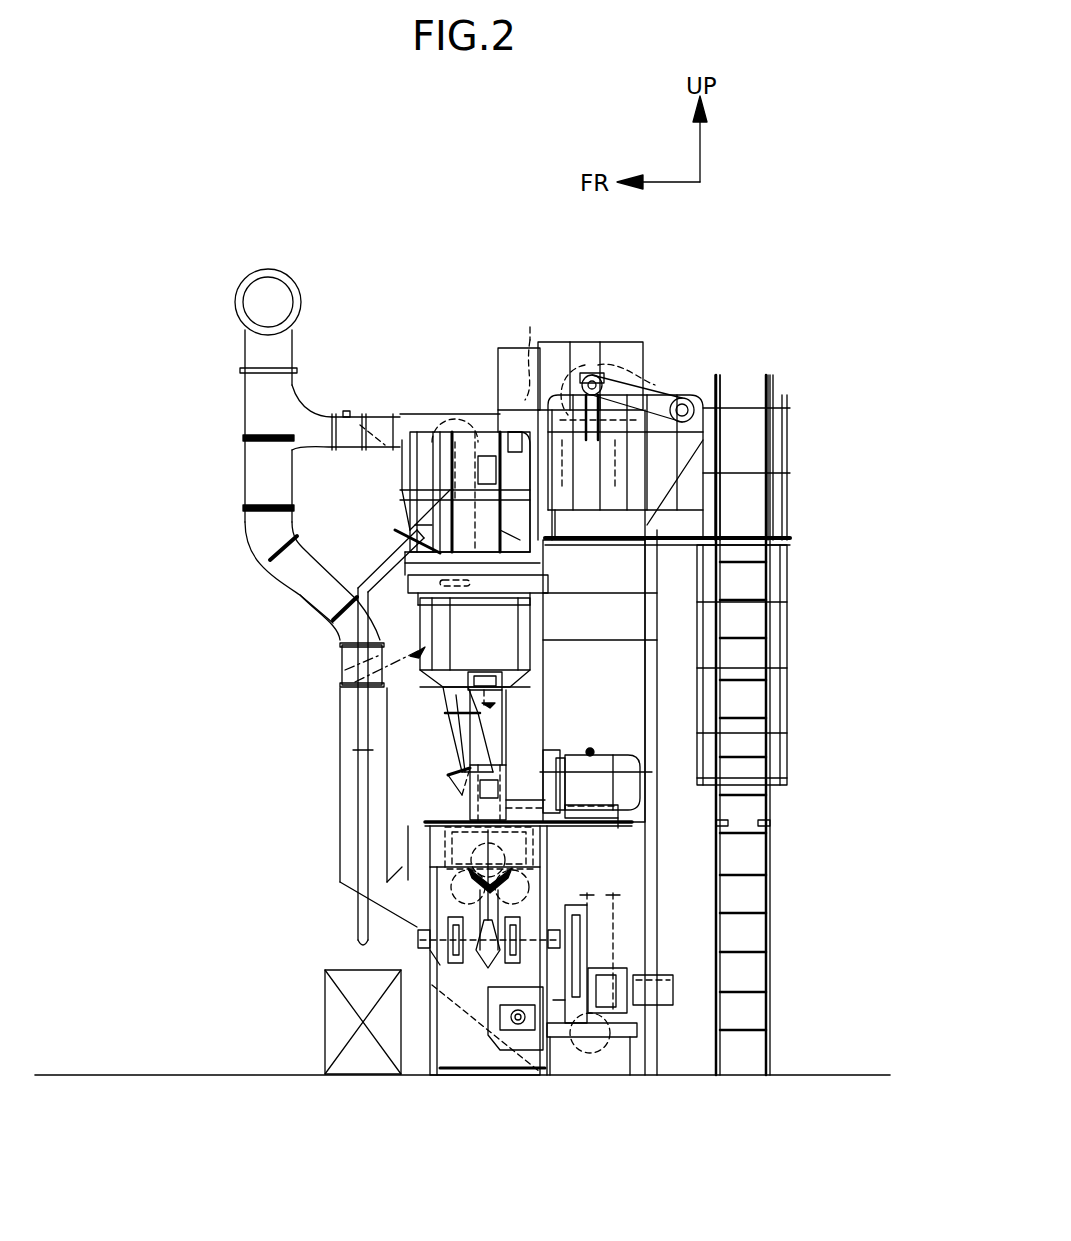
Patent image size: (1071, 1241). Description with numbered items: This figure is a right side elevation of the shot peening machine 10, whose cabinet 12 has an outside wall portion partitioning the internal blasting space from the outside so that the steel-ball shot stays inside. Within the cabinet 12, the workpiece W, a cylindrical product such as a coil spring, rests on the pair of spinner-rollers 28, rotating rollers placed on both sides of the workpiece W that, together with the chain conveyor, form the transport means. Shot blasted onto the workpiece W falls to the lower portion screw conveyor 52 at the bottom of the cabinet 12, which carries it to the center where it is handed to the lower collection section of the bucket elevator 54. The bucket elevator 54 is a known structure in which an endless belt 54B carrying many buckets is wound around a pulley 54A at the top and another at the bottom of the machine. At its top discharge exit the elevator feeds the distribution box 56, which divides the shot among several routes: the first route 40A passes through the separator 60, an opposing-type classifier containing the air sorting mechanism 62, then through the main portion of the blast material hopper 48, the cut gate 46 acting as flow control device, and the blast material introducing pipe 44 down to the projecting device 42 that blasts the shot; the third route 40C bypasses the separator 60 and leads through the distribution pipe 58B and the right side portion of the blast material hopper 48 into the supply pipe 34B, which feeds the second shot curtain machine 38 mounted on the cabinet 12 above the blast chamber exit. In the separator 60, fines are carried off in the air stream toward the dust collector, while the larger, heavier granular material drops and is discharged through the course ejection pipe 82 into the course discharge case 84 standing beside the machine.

The shot peening machine 10 is at (722, 258).
The cabinet 12 is at (440, 822).
The spinner-rollers 28 is at (450, 878).
The supply pipe 34B is at (495, 705).
The second shot curtain machine 38 is at (490, 770).
The first route 40A is at (450, 726).
The third route 40C is at (505, 723).
The projecting device 42 is at (464, 796).
The blast material introducing pipe 44 is at (456, 740).
The cut gate 46 is at (455, 693).
The blast material hopper 48 is at (358, 690).
The lower portion screw conveyor 52 is at (518, 1032).
The bucket elevator 54 is at (620, 342).
The pulley 54A is at (597, 1093).
The endless belt 54B is at (600, 945).
The distribution box 56 is at (498, 352).
The distribution pipe 58B is at (525, 540).
The separator 60 is at (424, 412).
The air sorting mechanism 62 is at (445, 412).
The course ejection pipe 82 is at (382, 565).
The course discharge case 84 is at (348, 968).
The workpiece W is at (510, 840).